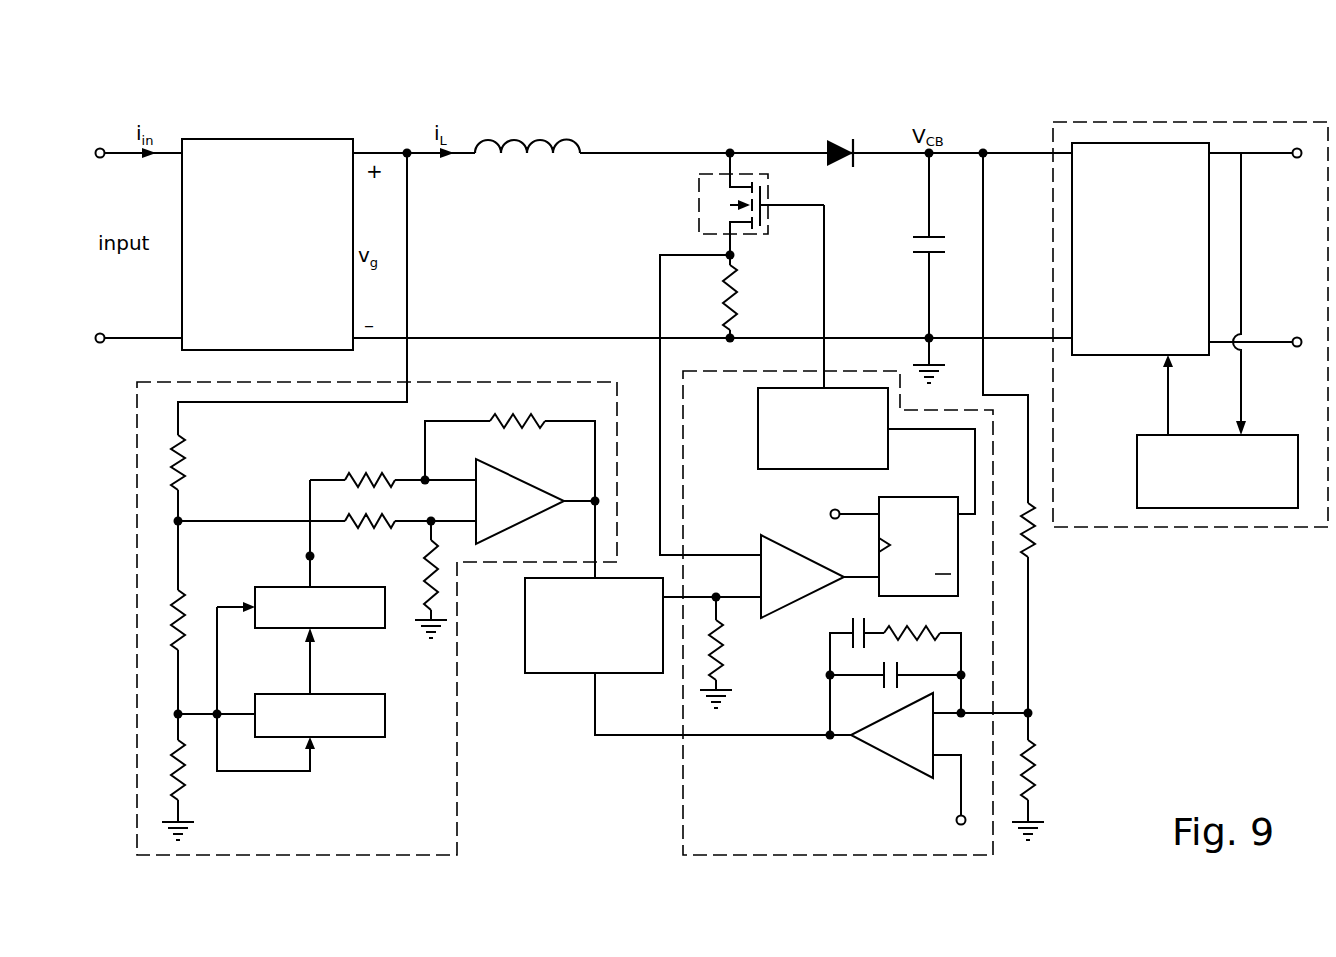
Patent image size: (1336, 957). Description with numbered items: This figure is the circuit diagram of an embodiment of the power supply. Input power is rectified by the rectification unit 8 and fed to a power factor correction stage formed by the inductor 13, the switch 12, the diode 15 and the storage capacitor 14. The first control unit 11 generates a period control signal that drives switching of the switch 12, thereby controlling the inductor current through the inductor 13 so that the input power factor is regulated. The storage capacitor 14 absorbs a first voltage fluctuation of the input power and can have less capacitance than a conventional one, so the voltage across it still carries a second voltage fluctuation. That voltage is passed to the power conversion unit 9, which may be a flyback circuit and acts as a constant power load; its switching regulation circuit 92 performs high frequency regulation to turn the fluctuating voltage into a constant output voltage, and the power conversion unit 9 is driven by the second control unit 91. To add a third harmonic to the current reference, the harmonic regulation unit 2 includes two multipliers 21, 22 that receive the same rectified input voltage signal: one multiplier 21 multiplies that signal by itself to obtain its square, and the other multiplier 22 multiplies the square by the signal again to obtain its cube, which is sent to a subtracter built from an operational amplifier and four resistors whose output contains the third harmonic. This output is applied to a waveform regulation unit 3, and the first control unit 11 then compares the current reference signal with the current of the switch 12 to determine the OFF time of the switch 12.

The rectification unit 8 is at (309, 139).
The inductor 13 is at (556, 160).
The switch 12 is at (703, 225).
The diode 15 is at (843, 140).
The storage capacitor 14 is at (918, 256).
The power conversion unit 9 is at (1190, 353).
The switching regulation circuit 92 is at (1161, 153).
The second control unit 91 is at (1262, 508).
The harmonic regulation unit 2 is at (377, 504).
The multiplier 22 is at (352, 628).
The multiplier 21 is at (352, 737).
The waveform regulation unit 3 is at (556, 675).
The first control unit 11 is at (681, 795).